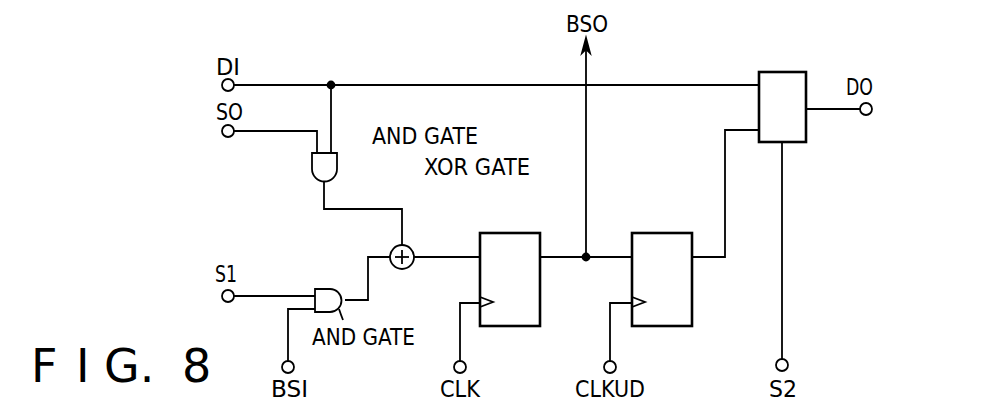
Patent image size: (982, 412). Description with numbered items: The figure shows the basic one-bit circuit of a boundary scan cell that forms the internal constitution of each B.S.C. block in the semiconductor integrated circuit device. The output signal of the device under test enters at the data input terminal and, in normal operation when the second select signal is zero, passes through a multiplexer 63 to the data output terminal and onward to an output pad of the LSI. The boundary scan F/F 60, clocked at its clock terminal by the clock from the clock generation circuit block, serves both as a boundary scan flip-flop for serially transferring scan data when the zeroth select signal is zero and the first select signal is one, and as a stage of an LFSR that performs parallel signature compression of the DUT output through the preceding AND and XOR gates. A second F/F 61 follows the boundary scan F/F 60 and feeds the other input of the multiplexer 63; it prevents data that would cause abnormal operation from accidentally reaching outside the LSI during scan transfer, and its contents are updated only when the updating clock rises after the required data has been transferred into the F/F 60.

The F/F 60 is at (520, 233).
The F/F 61 is at (692, 300).
The multiplexer 63 is at (778, 72).